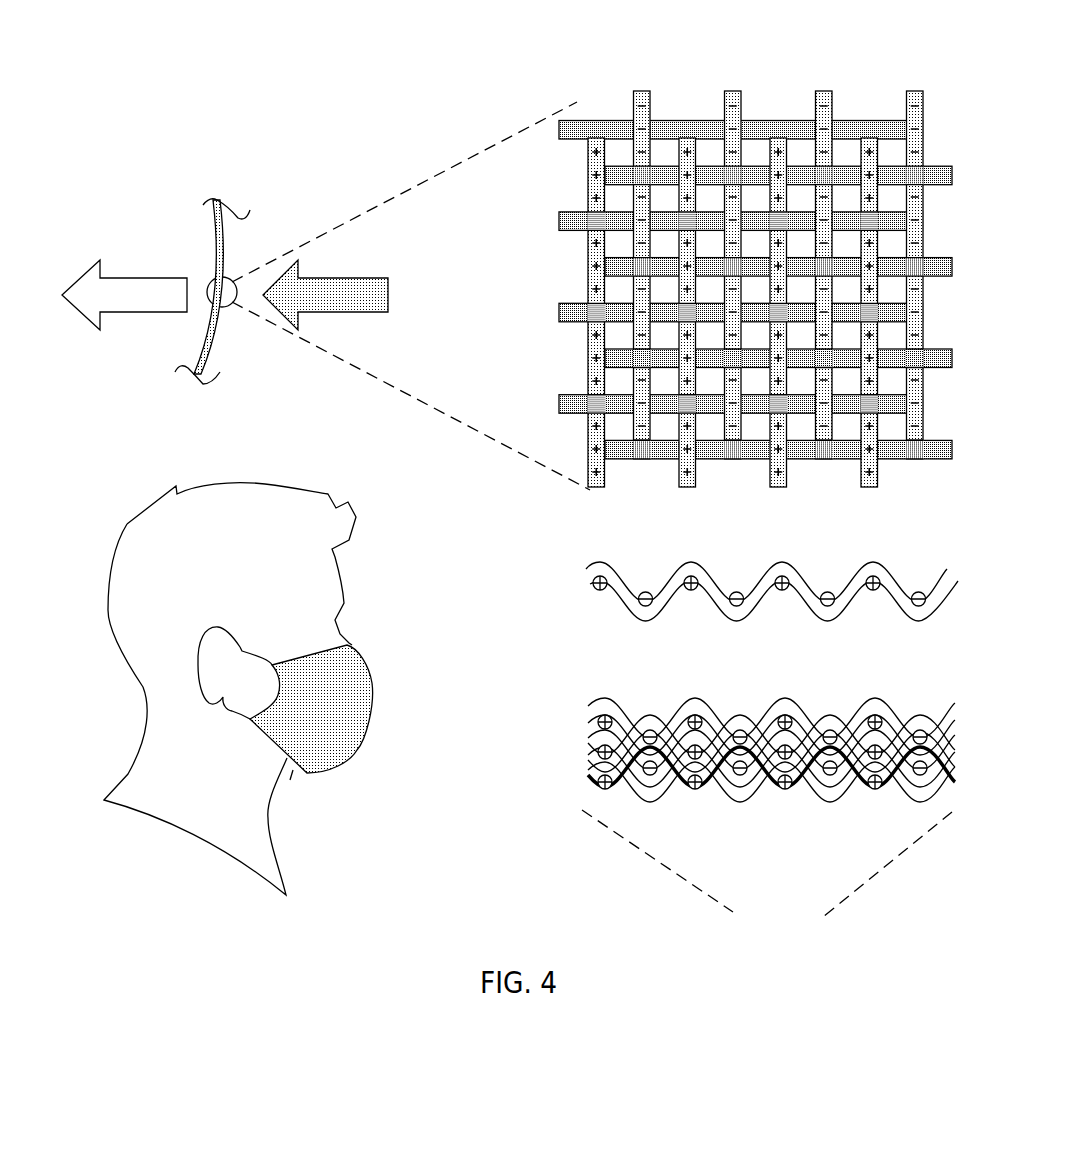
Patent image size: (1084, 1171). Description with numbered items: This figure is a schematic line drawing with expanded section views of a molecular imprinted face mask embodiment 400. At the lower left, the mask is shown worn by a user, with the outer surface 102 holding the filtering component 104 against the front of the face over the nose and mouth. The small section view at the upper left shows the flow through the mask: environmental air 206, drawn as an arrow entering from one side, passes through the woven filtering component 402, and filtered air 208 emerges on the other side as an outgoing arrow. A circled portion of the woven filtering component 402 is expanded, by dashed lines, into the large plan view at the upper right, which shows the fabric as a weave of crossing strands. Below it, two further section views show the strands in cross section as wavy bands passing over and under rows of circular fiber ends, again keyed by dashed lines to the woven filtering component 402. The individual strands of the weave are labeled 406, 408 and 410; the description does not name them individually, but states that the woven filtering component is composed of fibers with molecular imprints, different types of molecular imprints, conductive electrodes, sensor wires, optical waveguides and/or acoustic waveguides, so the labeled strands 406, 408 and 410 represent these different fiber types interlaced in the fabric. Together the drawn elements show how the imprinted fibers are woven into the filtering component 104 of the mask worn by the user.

The system diagram 400 is at (61, 24).
The outer surface 102 is at (375, 711).
The filtering component 104 is at (290, 780).
The environmental air 206 is at (373, 265).
The filtered air 208 is at (147, 268).
The woven filtering component 402 is at (222, 345).
The positively charged fibers 406 is at (588, 202).
The negatively charged fibers 408 is at (643, 91).
The weft fibers 410 is at (558, 130).